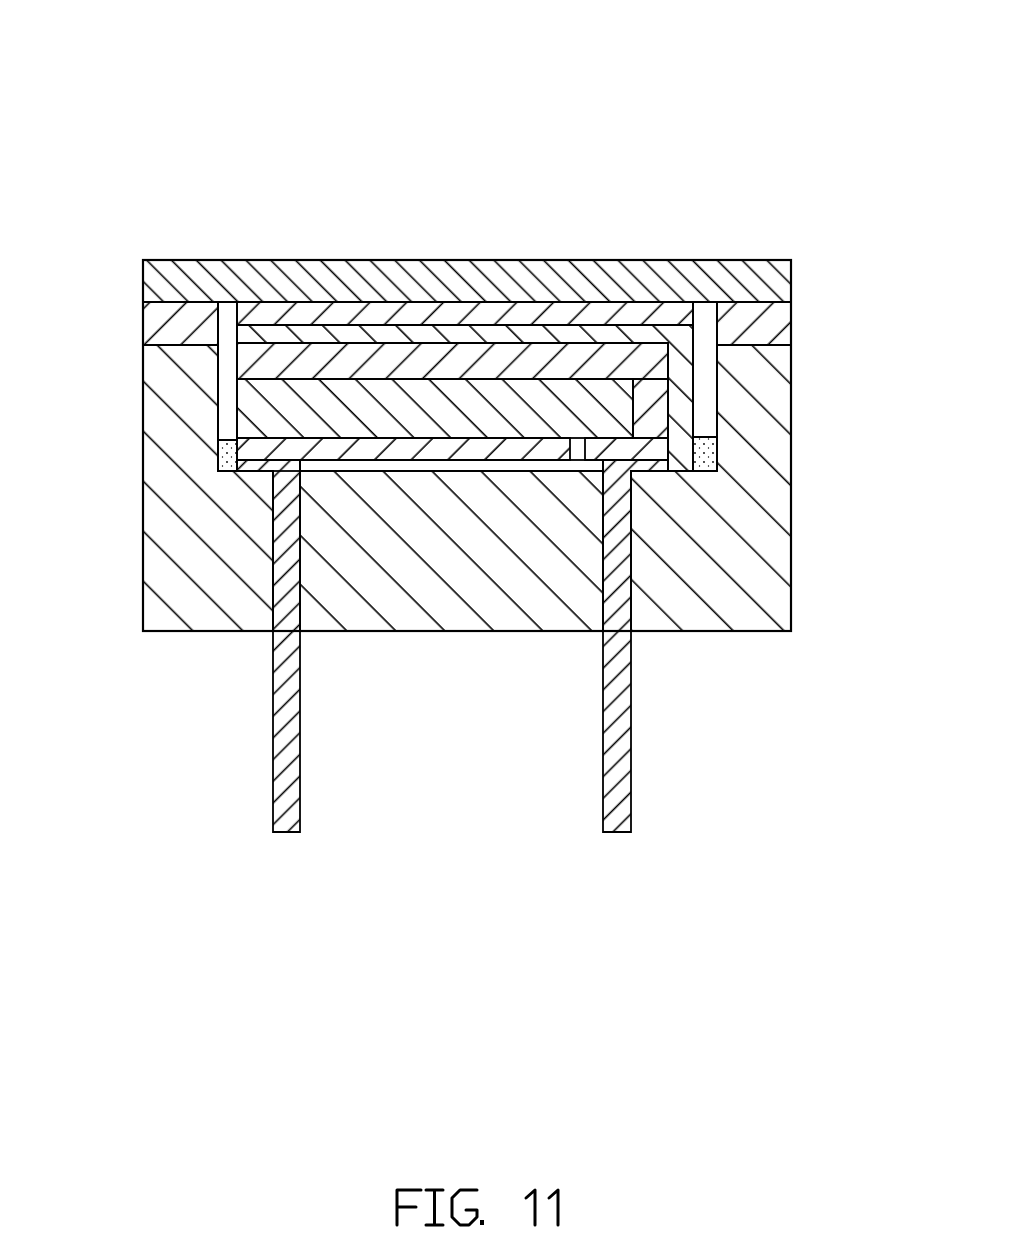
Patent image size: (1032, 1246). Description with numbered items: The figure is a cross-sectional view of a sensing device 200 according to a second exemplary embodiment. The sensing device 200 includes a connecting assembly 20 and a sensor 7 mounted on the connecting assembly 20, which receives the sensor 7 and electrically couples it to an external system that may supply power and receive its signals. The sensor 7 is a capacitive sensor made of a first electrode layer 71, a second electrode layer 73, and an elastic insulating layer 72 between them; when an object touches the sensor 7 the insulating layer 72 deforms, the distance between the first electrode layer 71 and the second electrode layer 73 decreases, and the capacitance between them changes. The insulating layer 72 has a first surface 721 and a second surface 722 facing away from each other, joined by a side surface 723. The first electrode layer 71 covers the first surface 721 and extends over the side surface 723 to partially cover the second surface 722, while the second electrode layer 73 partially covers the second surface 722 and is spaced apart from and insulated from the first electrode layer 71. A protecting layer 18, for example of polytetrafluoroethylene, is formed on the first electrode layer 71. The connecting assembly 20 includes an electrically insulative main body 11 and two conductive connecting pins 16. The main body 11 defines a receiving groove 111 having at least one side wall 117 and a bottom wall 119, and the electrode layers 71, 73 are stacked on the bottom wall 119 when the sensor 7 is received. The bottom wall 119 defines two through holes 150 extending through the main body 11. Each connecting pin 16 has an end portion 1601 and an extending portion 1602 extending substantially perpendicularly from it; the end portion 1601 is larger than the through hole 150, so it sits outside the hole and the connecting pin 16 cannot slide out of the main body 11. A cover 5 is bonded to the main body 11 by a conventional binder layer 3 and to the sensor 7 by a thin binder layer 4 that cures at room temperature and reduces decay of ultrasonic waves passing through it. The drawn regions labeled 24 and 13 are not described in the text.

The sensing device 200 is at (350, 51).
The cover 5 is at (716, 262).
The binder layer 3 is at (760, 321).
The binder layer 4 is at (572, 316).
The receiving groove 111 is at (226, 410).
The side wall 117 is at (211, 357).
The bottom wall 119 is at (228, 472).
The filling portion 24 is at (703, 480).
The protecting layer 18 is at (677, 365).
The sensor 7 is at (567, 326).
The first electrode layer 71 is at (655, 395).
The insulating layer 72 is at (610, 419).
The second electrode layer 73 is at (548, 453).
The first surface 721 is at (381, 375).
The second surface 722 is at (481, 425).
The side surface 723 is at (642, 384).
The main body 11 is at (508, 545).
The pedestal 13 is at (468, 577).
The connecting assembly 20 is at (757, 560).
The connecting pin 16 is at (371, 646).
The end portion 1601 is at (253, 473).
The extending portion 1602 is at (285, 712).
The through hole 150 is at (637, 547).